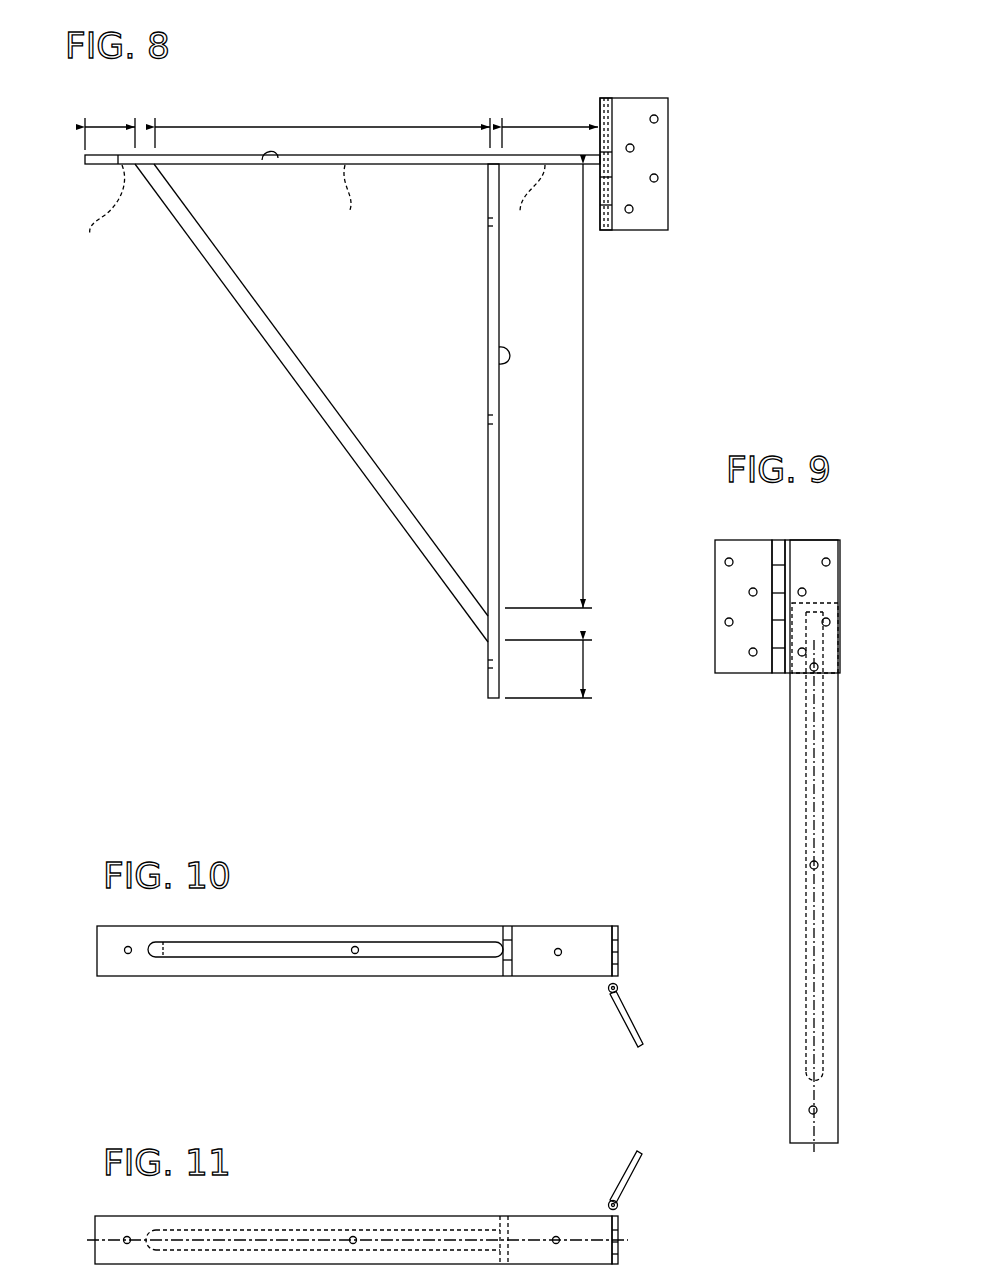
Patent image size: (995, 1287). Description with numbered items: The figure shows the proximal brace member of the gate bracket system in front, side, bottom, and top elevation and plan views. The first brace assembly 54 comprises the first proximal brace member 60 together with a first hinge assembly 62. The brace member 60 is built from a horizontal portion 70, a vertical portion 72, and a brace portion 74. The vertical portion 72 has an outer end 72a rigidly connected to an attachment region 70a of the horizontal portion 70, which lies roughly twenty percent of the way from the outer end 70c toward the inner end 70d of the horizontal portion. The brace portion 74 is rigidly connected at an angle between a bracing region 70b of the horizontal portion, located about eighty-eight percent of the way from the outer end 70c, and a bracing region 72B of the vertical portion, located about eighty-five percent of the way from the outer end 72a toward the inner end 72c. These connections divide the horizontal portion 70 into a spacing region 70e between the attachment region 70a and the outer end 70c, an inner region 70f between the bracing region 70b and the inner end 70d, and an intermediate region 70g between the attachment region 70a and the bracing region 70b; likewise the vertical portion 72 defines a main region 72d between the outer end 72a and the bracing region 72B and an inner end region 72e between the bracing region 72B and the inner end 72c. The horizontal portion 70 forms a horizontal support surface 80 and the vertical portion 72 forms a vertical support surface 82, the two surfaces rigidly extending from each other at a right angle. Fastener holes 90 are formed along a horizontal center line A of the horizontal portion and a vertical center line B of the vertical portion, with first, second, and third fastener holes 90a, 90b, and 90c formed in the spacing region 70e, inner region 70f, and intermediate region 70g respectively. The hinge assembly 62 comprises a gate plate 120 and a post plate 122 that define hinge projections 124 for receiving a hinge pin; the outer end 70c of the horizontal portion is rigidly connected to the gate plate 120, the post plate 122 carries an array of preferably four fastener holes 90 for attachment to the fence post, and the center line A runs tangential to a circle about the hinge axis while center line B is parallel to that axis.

In FIG. 8, the first brace assembly 54 is at (284, 404).
In FIG. 8, the first proximal brace member 60 is at (318, 454).
In FIG. 8, the first hinge assembly 62 is at (691, 183).
In FIG. 9, the first hinge assembly 62 is at (747, 622).
In FIG. 8, the horizontal portion 70 is at (300, 165).
In FIG. 10, the horizontal portion 70 is at (318, 928).
In FIG. 11, the horizontal portion 70 is at (302, 1229).
In FIG. 8, the attachment region 70a is at (493, 125).
In FIG. 8, the bracing region 70b is at (145, 124).
In FIG. 8, the outer end 70c is at (594, 153).
In FIG. 10, the outer end 70c is at (608, 958).
In FIG. 8, the inner end 70d is at (84, 161).
In FIG. 10, the inner end 70d is at (92, 946).
In FIG. 8, the spacing region 70e is at (548, 126).
In FIG. 8, the inner region 70f is at (112, 126).
In FIG. 8, the intermediate region 70g is at (322, 126).
In FIG. 8, the vertical portion 72 is at (488, 316).
In FIG. 9, the vertical portion 72 is at (795, 797).
In FIG. 10, the vertical portion 72 is at (510, 936).
In FIG. 8, the outer end 72a is at (486, 170).
In FIG. 8, the bracing region 72B is at (585, 628).
In FIG. 8, the inner end 72c is at (494, 705).
In FIG. 9, the inner end 72c is at (800, 1155).
In FIG. 8, the main region 72d is at (583, 378).
In FIG. 8, the inner end region 72e is at (585, 668).
In FIG. 8, the brace portion 74 is at (270, 330).
In FIG. 10, the brace portion 74 is at (388, 945).
In FIG. 8, the horizontal support surface 80 is at (266, 160).
In FIG. 8, the vertical support surface 82 is at (499, 343).
In FIG. 8, the fastener holes 90 is at (635, 148).
In FIG. 9, the fastener holes 90 is at (749, 592).
In FIG. 8, the first fastener hole 90a is at (541, 196).
In FIG. 8, the second fastener hole 90b is at (367, 192).
In FIG. 8, the third fastener hole 90c is at (95, 204).
In FIG. 9, the gate plate 120 is at (810, 548).
In FIG. 10, the gate plate 120 is at (620, 953).
In FIG. 11, the gate plate 120 is at (620, 1248).
In FIG. 8, the post plate 122 is at (660, 122).
In FIG. 9, the post plate 122 is at (745, 548).
In FIG. 10, the post plate 122 is at (632, 1024).
In FIG. 11, the post plate 122 is at (633, 1172).
In FIG. 8, the hinge projections 124 is at (616, 205).
In FIG. 9, the hinge projections 124 is at (778, 632).
In FIG. 10, the hinge projections 124 is at (620, 988).
In FIG. 11, the hinge projections 124 is at (618, 1208).
In FIG. 11, the horizontal center line A is at (396, 1240).
In FIG. 9, the vertical center line B is at (812, 833).